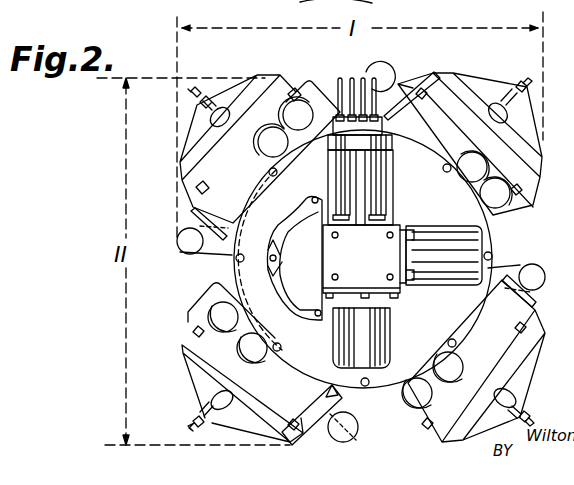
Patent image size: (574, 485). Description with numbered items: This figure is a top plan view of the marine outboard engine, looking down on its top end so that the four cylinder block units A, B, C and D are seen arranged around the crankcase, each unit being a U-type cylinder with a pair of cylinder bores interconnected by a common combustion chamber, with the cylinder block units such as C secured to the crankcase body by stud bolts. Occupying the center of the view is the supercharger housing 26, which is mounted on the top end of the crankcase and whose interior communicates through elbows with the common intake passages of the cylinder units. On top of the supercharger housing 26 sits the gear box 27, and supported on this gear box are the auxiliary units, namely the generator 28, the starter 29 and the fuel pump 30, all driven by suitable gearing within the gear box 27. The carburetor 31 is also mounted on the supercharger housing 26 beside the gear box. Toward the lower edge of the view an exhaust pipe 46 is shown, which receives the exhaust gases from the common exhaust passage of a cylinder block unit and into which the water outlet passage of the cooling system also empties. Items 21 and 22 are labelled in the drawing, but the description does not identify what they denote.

The nozzle valve 21 is at (190, 94).
The guide pins 22 is at (383, 71).
The supercharger housing 26 is at (232, 272).
The gear box 27 is at (367, 243).
The generator 28 is at (340, 173).
The starter 29 is at (427, 230).
The fuel pump 30 is at (387, 330).
The carburetor 31 is at (300, 283).
The exhaust pipe 46 is at (341, 441).
The cylinder block unit A is at (242, 148).
The cylinder block unit B is at (440, 93).
The cylinder block unit C is at (517, 390).
The cylinder block unit D is at (227, 375).